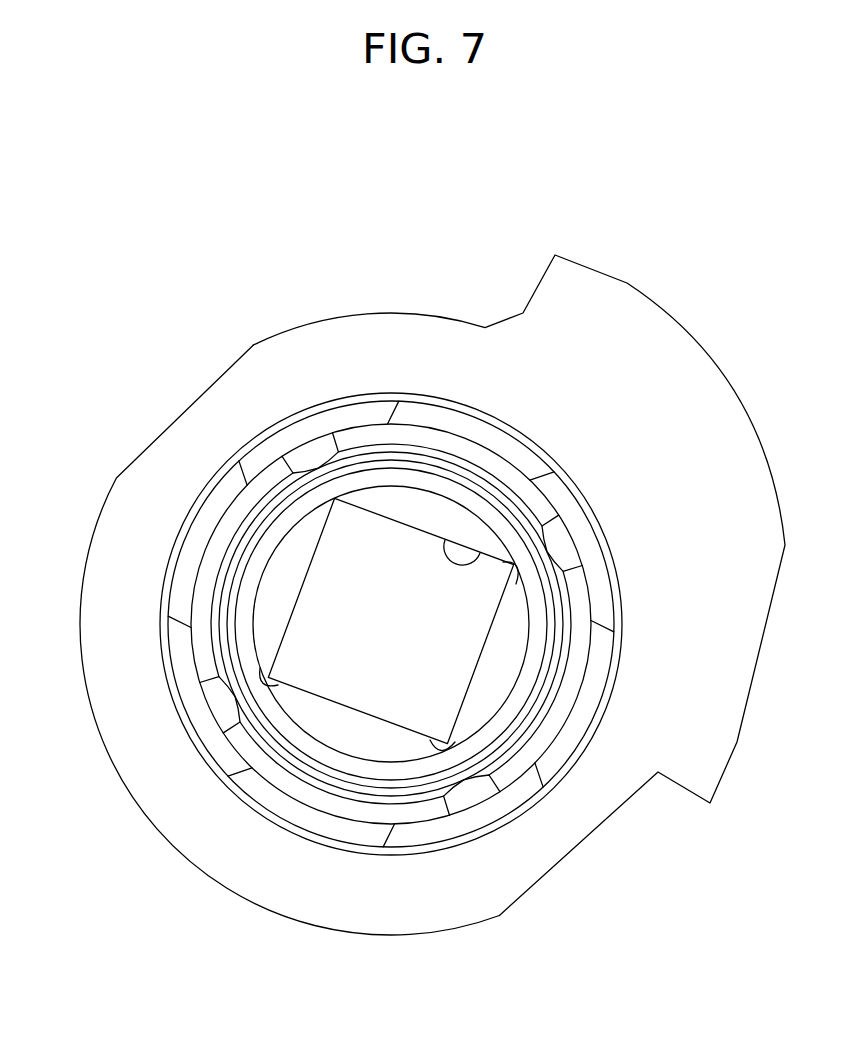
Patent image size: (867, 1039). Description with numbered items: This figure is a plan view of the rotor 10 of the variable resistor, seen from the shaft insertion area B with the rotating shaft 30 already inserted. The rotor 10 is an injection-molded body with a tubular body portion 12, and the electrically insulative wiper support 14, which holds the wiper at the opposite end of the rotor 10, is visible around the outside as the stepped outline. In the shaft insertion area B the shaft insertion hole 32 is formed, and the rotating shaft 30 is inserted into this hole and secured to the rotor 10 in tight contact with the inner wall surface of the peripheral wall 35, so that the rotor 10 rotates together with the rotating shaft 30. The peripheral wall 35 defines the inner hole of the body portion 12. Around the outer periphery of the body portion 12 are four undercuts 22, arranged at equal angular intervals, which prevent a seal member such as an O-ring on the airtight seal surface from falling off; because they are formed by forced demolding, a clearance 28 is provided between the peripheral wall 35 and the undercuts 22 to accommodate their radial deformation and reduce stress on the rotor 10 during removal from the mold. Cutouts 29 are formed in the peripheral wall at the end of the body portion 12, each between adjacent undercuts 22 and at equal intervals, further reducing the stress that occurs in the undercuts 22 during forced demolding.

The rotor 10 is at (219, 351).
The body portion 12 is at (177, 438).
The wiper support 14 is at (718, 393).
The shaft insertion area B is at (336, 394).
The undercuts 22 is at (485, 430).
The clearance 28 is at (557, 601).
The cutouts 29 is at (313, 450).
The rotating shaft 30 is at (388, 538).
The shaft insertion hole 32 is at (445, 541).
The peripheral wall 35 is at (373, 482).